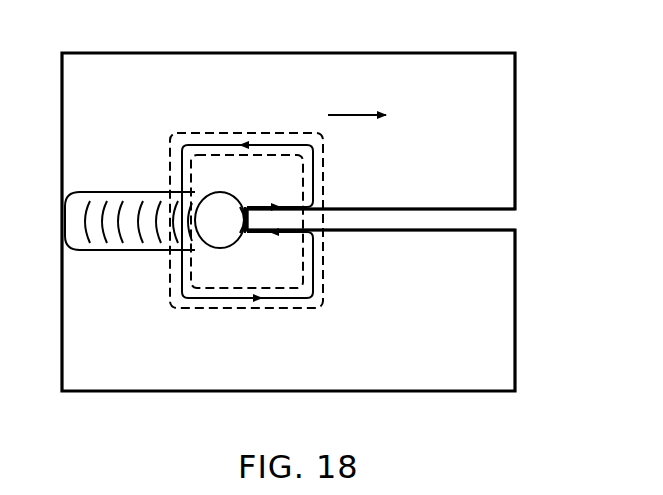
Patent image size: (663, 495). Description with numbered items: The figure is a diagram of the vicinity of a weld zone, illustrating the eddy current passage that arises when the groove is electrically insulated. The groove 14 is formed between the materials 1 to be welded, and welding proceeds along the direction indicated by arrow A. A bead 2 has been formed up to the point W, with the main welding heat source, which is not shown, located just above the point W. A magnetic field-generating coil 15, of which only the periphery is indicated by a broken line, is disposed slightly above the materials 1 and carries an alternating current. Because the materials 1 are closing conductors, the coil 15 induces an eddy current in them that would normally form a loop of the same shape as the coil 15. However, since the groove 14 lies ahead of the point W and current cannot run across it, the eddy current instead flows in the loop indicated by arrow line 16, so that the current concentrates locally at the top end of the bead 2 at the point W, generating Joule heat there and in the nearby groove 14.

The materials to be welded 1 is at (458, 60).
The bead 2 is at (110, 200).
The groove 14 is at (514, 214).
The magnetic field-generating coil 15 is at (198, 306).
The arrow line 16 is at (296, 300).
The point W is at (238, 202).
The arrow A is at (367, 115).